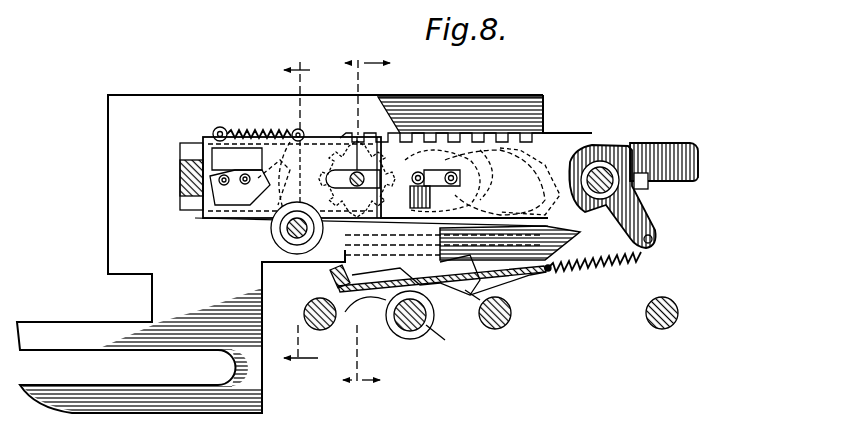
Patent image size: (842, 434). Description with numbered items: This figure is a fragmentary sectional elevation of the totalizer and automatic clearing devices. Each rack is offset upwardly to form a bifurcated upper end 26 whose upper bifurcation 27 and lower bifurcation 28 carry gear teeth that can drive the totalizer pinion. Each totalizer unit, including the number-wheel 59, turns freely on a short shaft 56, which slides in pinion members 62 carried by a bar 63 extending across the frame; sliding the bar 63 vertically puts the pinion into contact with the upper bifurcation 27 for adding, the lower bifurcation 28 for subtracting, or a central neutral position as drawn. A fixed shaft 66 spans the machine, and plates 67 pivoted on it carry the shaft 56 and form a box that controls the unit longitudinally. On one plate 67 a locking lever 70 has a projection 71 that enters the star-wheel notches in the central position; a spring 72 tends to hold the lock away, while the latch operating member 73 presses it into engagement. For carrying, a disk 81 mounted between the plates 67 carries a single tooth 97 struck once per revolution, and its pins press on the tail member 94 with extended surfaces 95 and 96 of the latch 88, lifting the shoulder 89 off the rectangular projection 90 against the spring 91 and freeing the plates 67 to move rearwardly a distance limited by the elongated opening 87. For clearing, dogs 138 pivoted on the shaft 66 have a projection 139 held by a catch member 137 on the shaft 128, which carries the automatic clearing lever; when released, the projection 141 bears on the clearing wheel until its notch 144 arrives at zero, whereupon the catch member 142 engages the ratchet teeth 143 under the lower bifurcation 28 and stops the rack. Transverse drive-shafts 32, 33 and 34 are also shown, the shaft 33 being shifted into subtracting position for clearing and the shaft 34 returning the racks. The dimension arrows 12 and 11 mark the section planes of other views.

The bifurcated upper end 26 is at (108, 224).
The number-wheel 59 is at (312, 112).
The bar 63 is at (180, 172).
The projection 71 is at (226, 196).
The latch operating member 73 is at (262, 200).
The spring 72 is at (272, 122).
The locking lever 70 is at (314, 142).
The short shaft 56 is at (362, 144).
The single tooth 97 is at (441, 119).
The disk 81 is at (458, 186).
The extended surface 95 is at (418, 205).
The upper bifurcation 27 is at (505, 145).
The tail member 94 is at (525, 178).
The extended surface 96 is at (499, 172).
The fixed shaft 66 is at (618, 150).
The plate 67 is at (572, 148).
The latch 88 is at (696, 150).
The shoulder 89 is at (700, 172).
The rectangular projection 90 is at (648, 188).
The spring 91 is at (612, 258).
The elongated opening 87 is at (510, 243).
The lower bifurcation 28 is at (530, 275).
The projection 141 is at (317, 280).
The dog 138 is at (449, 282).
The catch member 142 is at (386, 315).
The notch 144 is at (442, 245).
The ratchet teeth 143 is at (460, 275).
The pinion member 62 is at (268, 244).
The drive-shaft 33 is at (323, 328).
The shaft 128 is at (412, 340).
The catch member 137 is at (412, 379).
The projection 139 is at (505, 325).
The drive-shaft 32 is at (512, 313).
The drive-shaft 34 is at (646, 314).
The section line 12 is at (320, 389).
The section line 11 is at (334, 412).